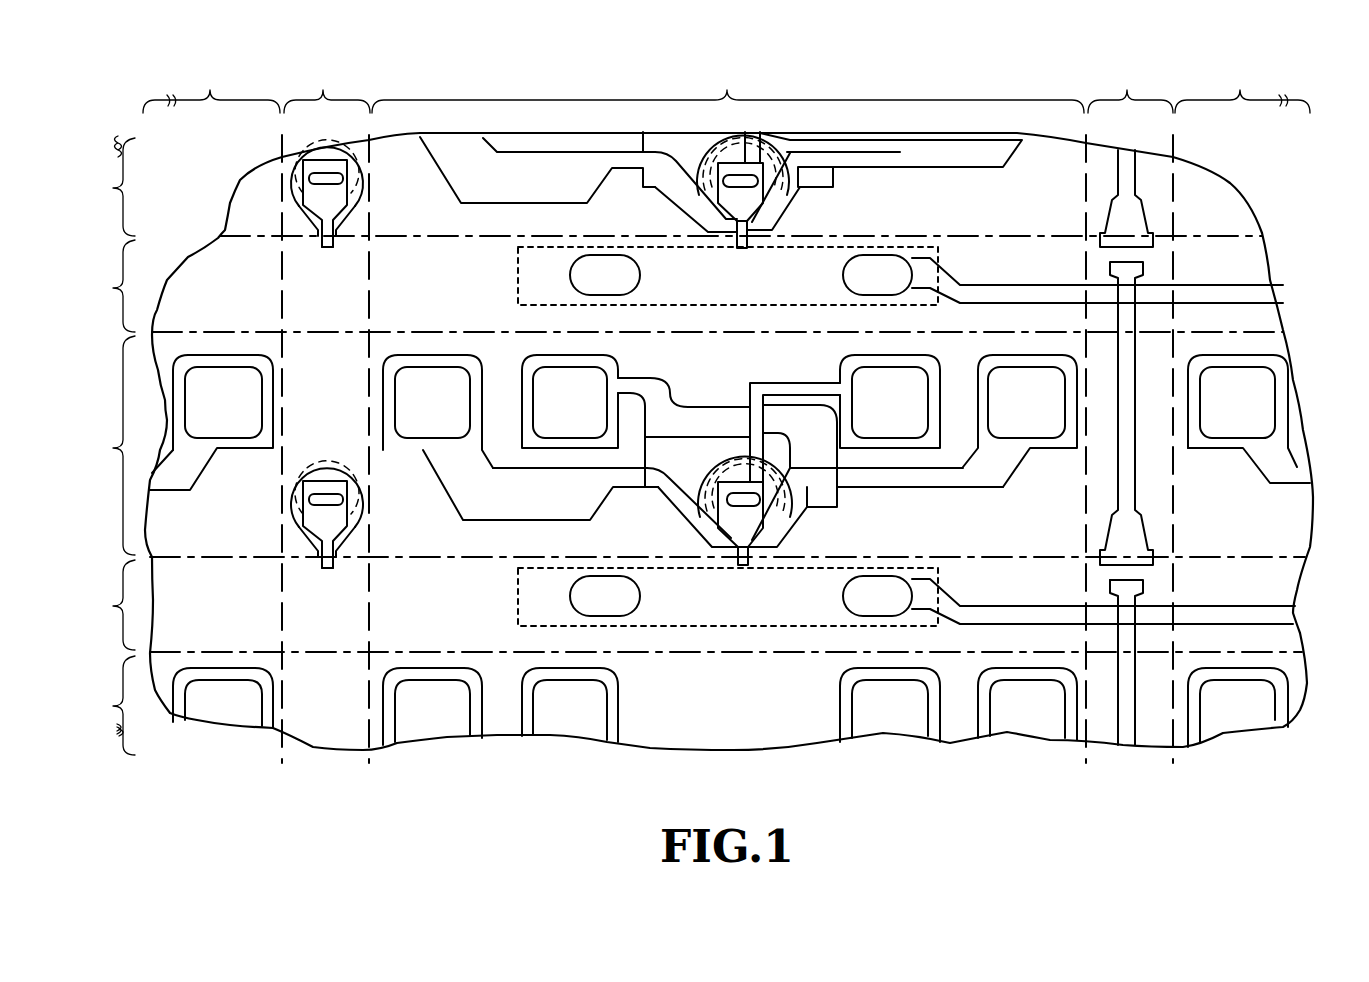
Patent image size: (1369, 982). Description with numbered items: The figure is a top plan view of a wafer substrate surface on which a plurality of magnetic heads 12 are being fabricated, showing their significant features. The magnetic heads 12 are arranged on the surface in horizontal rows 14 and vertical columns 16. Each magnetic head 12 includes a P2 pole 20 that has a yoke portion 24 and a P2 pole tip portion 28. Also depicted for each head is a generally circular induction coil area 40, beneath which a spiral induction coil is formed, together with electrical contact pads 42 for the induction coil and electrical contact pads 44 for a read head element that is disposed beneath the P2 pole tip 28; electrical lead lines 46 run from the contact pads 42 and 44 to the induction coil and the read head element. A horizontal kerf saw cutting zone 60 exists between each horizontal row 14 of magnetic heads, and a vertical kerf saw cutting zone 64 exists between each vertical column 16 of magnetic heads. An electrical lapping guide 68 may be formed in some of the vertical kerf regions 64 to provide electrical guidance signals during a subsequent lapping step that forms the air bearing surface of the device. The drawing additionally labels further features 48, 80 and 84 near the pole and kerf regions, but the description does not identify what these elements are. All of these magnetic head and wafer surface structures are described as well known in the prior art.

The magnetic head 12 is at (252, 212).
The horizontal row 14 is at (111, 445).
The vertical column 16 is at (726, 87).
The P2 pole 20 is at (752, 215).
The yoke portion 24 is at (707, 205).
The P2 pole tip portion 28 is at (735, 240).
The induction coil area 40 is at (712, 155).
The electrical contact pads 42 is at (225, 422).
The electrical contact pads 44 is at (555, 375).
The electrical lead lines 46 is at (477, 190).
The conductive trace 48 is at (795, 205).
The horizontal kerf saw cutting zone 60 is at (512, 445).
The vertical kerf saw cutting zone 64 is at (728, 87).
The electrical lapping guide 68 is at (1133, 207).
The circular pad 80 is at (350, 195).
The pad tab 84 is at (327, 248).